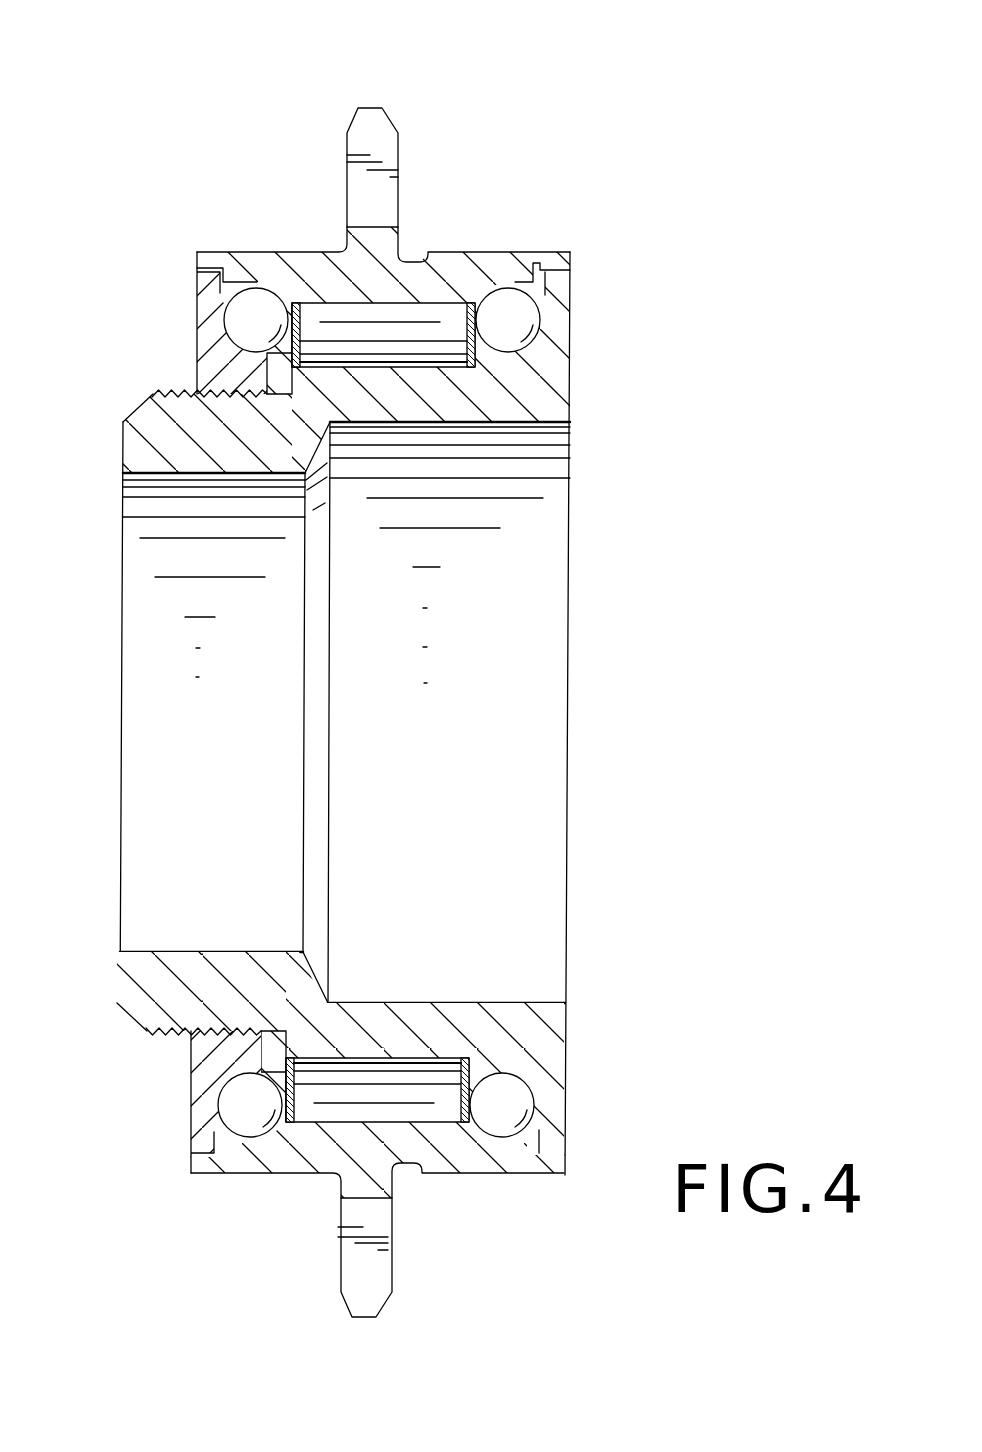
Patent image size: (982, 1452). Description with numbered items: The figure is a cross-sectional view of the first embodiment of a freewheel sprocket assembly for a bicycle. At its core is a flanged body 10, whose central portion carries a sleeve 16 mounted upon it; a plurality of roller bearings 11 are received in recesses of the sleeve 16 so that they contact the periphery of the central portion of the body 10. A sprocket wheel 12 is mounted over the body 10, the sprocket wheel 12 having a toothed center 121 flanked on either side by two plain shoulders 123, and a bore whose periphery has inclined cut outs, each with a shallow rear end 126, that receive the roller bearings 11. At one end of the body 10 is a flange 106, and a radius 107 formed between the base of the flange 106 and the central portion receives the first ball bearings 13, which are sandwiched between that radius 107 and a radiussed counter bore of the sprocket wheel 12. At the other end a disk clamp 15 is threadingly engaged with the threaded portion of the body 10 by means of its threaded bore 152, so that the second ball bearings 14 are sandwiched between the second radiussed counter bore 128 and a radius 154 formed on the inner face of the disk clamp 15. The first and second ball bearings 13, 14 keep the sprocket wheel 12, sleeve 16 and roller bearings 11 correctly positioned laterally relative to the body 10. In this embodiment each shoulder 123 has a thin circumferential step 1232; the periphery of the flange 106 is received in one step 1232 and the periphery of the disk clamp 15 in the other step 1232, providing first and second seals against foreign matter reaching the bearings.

The flanged body 10 is at (350, 376).
The roller bearings 11 is at (420, 312).
The sprocket wheel 12 is at (347, 227).
The toothed center 121 is at (384, 110).
The plain shoulders 123 is at (507, 251).
The circumferential step 1232 is at (205, 254).
The first ball bearings 13 is at (530, 305).
The second ball bearings 14 is at (237, 311).
The disk clamp 15 is at (207, 360).
The threaded bore 152 is at (197, 1028).
The radius 154 is at (218, 1092).
The sleeve 16 is at (281, 355).
The flange 106 is at (563, 292).
The radius 107 is at (525, 1086).
The shallow rear end 126 is at (494, 1142).
The second radiussed counter bore 128 is at (255, 1142).